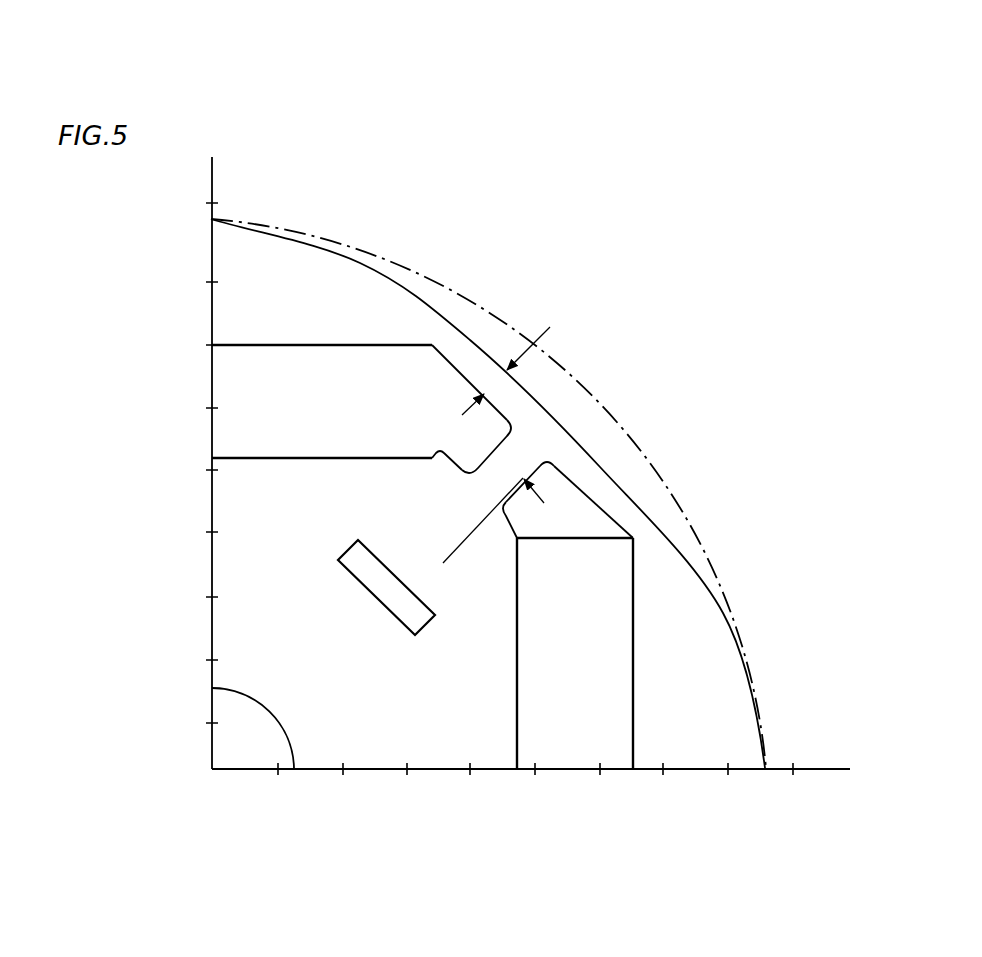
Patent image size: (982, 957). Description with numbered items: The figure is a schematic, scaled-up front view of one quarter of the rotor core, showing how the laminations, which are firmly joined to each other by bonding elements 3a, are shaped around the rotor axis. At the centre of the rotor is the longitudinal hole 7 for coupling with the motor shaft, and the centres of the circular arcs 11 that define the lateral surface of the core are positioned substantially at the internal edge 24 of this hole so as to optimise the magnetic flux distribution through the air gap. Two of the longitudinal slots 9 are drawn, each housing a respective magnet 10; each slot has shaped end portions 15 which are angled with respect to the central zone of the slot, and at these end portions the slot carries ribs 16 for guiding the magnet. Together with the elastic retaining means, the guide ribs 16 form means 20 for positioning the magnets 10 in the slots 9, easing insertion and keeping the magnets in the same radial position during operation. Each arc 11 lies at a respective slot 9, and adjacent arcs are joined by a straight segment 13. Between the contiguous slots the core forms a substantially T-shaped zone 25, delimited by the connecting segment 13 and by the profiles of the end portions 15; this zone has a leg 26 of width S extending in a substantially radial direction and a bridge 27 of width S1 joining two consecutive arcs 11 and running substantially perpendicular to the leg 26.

The bonding elements 3a is at (250, 624).
The longitudinal hole 7 is at (226, 738).
The longitudinal slot 9 is at (232, 347).
The magnet 10 is at (476, 620).
The circular arc 11 is at (367, 258).
The straight segment 13 is at (643, 505).
The end portion 15 is at (446, 423).
The rib 16 is at (436, 462).
The positioning means 20 is at (511, 538).
The internal edge 24 is at (288, 738).
The T-shaped zone 25 is at (553, 442).
The leg 26 is at (491, 481).
The bridge 27 is at (517, 395).
The leg width S is at (420, 597).
The bridge width S1 is at (498, 383).